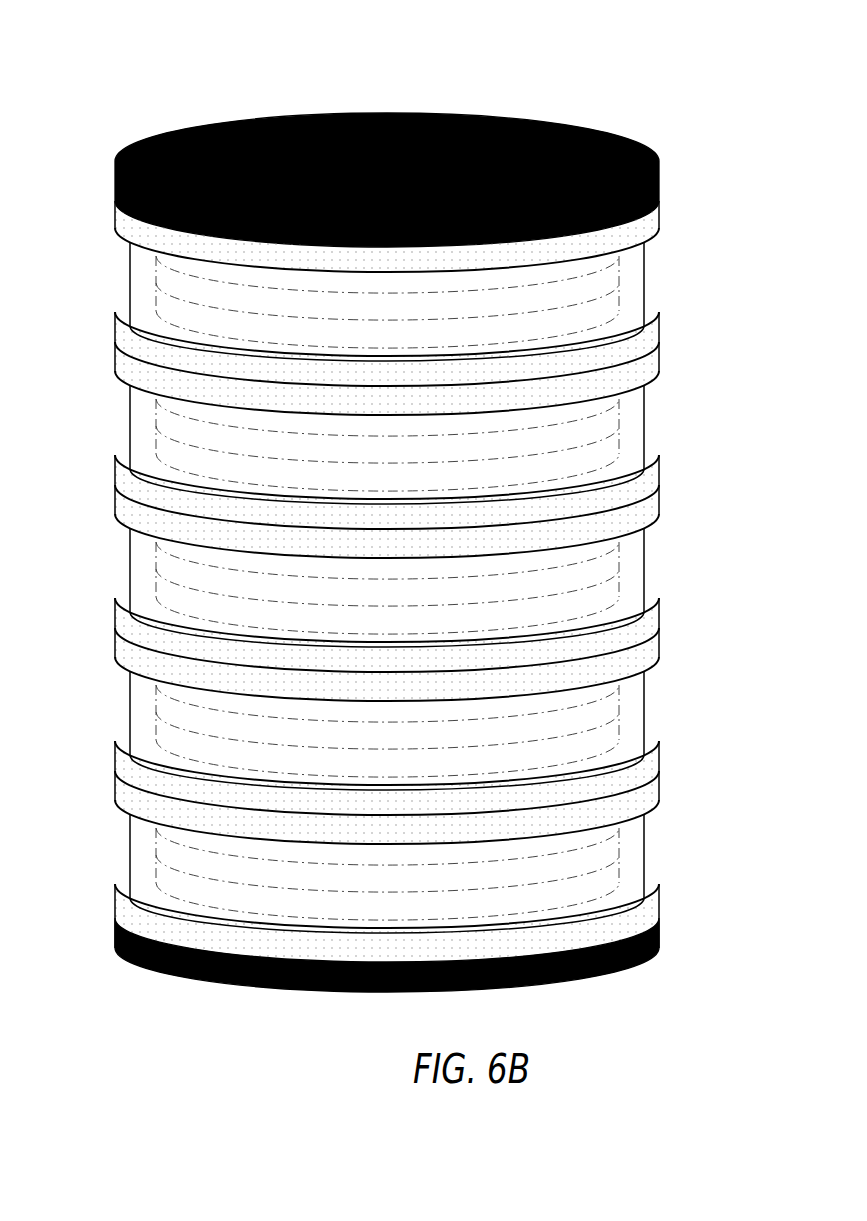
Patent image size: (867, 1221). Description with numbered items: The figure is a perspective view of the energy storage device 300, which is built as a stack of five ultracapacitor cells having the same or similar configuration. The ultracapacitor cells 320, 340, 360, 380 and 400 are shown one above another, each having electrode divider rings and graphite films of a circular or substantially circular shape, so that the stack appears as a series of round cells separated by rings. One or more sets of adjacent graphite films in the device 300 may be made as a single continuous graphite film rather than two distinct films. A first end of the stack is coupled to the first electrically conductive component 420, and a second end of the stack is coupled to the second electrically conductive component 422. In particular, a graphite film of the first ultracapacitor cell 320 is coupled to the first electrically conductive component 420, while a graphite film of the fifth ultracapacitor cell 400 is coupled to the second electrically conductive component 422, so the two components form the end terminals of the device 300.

The energy storage device 300 is at (403, 502).
The first ultracapacitor cell 320 is at (677, 271).
The second ultracapacitor cell 340 is at (677, 413).
The third ultracapacitor cell 360 is at (677, 556).
The fourth ultracapacitor cell 380 is at (677, 699).
The fifth ultracapacitor cell 400 is at (677, 842).
The first electrically conductive component 420 is at (113, 188).
The second electrically conductive component 422 is at (113, 928).